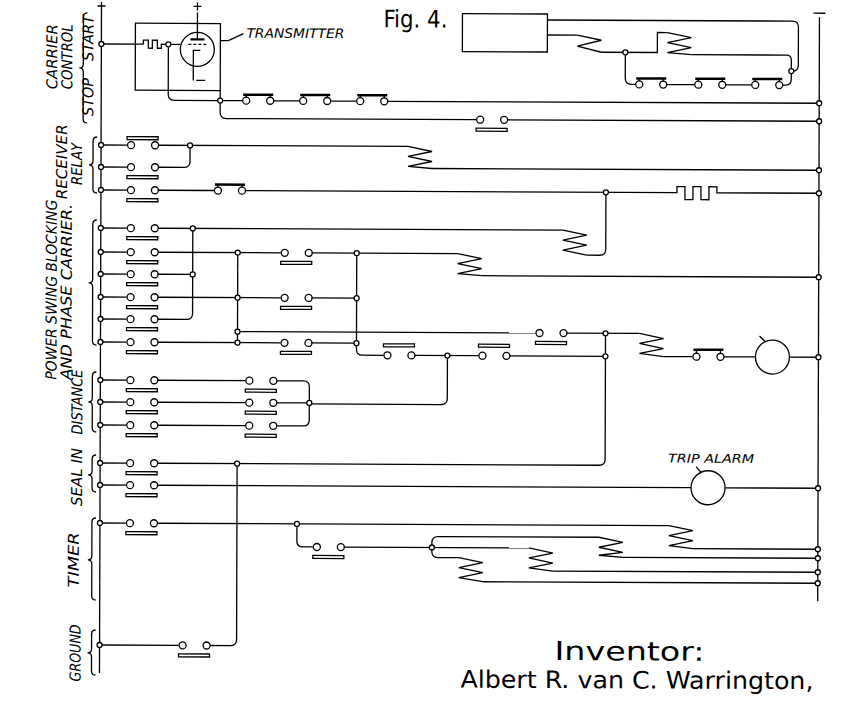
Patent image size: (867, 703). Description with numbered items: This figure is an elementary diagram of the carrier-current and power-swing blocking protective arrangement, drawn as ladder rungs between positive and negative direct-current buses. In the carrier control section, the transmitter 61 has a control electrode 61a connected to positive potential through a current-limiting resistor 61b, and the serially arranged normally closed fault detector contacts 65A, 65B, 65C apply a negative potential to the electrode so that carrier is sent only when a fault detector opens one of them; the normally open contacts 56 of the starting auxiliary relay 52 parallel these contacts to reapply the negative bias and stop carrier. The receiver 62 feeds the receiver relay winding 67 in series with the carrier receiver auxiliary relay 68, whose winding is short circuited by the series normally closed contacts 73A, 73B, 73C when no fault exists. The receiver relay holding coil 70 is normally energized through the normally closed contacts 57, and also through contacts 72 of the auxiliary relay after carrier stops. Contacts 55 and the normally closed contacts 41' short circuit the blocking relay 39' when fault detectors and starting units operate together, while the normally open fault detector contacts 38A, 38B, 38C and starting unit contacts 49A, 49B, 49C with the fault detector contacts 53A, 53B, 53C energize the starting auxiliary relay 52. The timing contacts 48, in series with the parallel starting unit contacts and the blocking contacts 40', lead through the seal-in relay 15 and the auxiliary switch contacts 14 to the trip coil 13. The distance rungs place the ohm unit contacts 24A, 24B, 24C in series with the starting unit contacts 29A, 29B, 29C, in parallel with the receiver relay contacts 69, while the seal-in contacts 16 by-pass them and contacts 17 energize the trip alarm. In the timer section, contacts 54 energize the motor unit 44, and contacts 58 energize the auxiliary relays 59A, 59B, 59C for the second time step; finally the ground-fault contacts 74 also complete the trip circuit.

The trip coil 13 is at (752, 348).
The auxiliary switch contacts 14 is at (718, 360).
The seal-in relay 15 is at (661, 336).
The seal-in relay contacts 16 is at (158, 461).
The normally open alarm contacts 17 is at (158, 483).
The ohm unit contacts 24A is at (251, 377).
The ohm unit contacts 24B is at (277, 401).
The ohm unit contacts 24C is at (277, 426).
The starting unit contacts 29A is at (158, 378).
The starting unit contacts 29B is at (158, 400).
The starting unit contacts 29C is at (158, 424).
The normally open fault detector contacts 38A is at (153, 226).
The normally open fault detector contacts 38B is at (158, 273).
The normally open fault detector contacts 38C is at (158, 318).
The blocking relay 39' is at (578, 231).
The normally closed blocking relay contacts 40' is at (494, 362).
The normally closed blocking relay contacts 41' is at (229, 199).
The electromagnetic motor unit 44 is at (694, 535).
The timing unit contacts 48 is at (543, 328).
The normally open starting unit contacts 49A is at (158, 251).
The normally open starting unit contacts 49B is at (158, 296).
The normally open starting unit contacts 49C is at (158, 341).
The starting auxiliary relay 52 is at (484, 265).
The normally open fault detector contacts 53A is at (311, 251).
The normally open fault detector contacts 53B is at (311, 295).
The normally open fault detector contacts 53C is at (313, 347).
The normally open contacts 54 is at (158, 520).
The normally open contacts 55 is at (160, 189).
The normally open contacts 56 is at (507, 116).
The normally closed contacts 57 is at (147, 149).
The timing unit contacts 58 is at (345, 545).
The auxiliary relay 59A is at (624, 549).
The auxiliary relay 59B is at (554, 558).
The auxiliary relay 59C is at (484, 572).
The transmitter 61 is at (213, 23).
The control electrode 61a is at (185, 33).
The current-limiting resistor 61b is at (145, 33).
The receiver 62 is at (518, 54).
The normally closed fault detector contacts 65A is at (273, 96).
The normally closed fault detector contacts 65B is at (330, 96).
The normally closed fault detector contacts 65C is at (387, 96).
The receiver relay winding 67 is at (592, 45).
The carrier receiver auxiliary relay 68 is at (690, 48).
The receiver relay contacts 69 is at (389, 358).
The holding coil 70 is at (430, 160).
The receiver auxiliary relay contacts 72 is at (160, 165).
The normally closed fault detector contacts 73A is at (666, 78).
The normally closed fault detector contacts 73B is at (724, 78).
The normally closed fault detector contacts 73C is at (764, 78).
The ground-fault contacts 74 is at (188, 641).